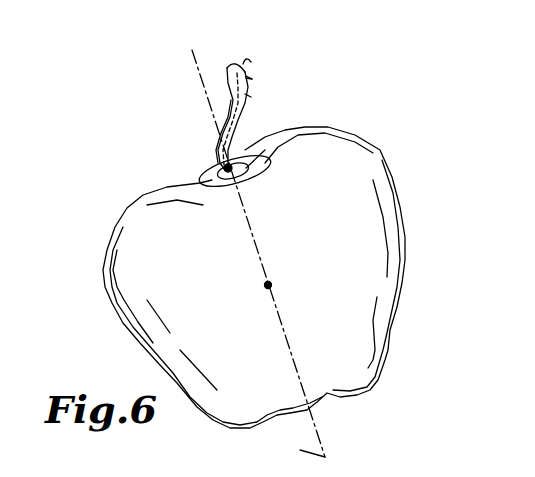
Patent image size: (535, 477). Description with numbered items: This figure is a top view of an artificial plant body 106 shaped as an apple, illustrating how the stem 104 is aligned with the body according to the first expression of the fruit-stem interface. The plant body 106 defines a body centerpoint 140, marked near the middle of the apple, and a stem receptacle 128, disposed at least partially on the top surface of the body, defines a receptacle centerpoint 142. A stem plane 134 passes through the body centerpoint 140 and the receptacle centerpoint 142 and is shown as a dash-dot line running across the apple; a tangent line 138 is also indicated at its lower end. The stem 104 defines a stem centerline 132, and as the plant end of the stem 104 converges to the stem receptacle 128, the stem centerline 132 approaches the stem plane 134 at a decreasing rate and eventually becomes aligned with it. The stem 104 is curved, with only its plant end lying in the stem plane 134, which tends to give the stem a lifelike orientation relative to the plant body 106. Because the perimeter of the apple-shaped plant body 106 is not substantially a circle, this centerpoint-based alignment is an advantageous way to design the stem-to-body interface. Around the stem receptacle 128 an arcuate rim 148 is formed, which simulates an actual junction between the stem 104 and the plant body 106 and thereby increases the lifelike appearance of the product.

The stem 104 is at (249, 78).
The plant body 106 is at (383, 200).
The stem receptacle 128 is at (310, 147).
The stem centerline 132 is at (249, 96).
The stem plane 134 is at (207, 92).
The tangent line 138 is at (357, 463).
The body centerpoint 140 is at (268, 285).
The receptacle centerpoint 142 is at (220, 160).
The arcuate rim 148 is at (252, 153).